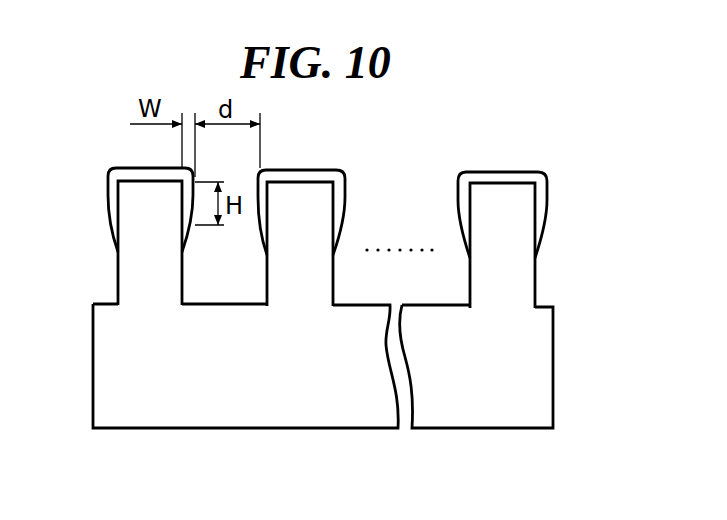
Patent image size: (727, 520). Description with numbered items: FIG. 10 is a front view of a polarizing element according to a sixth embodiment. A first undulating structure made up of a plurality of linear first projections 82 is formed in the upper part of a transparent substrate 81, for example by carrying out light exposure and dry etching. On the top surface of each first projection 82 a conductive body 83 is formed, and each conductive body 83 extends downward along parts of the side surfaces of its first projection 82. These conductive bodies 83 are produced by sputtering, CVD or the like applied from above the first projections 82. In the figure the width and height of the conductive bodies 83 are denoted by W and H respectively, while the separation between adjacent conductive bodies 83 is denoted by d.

The transparent substrate 81 is at (302, 412).
The first projection 82 is at (287, 193).
The conductive body 83 is at (323, 175).